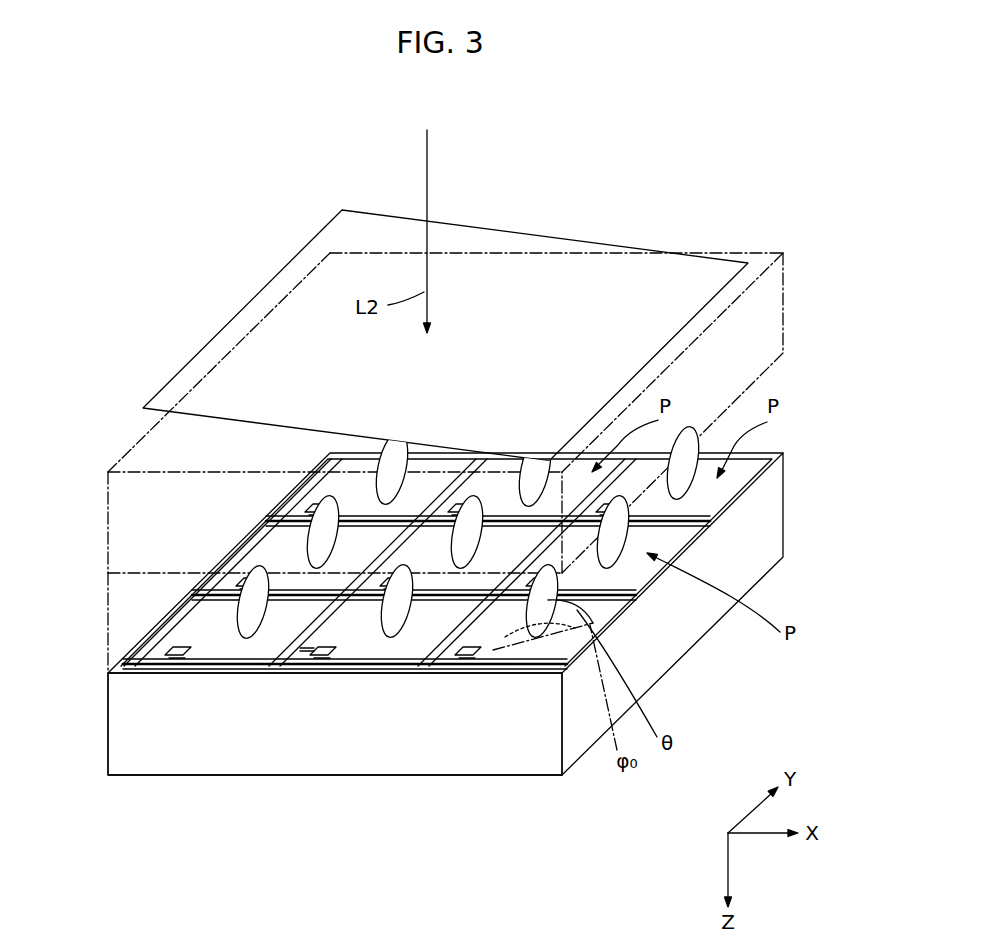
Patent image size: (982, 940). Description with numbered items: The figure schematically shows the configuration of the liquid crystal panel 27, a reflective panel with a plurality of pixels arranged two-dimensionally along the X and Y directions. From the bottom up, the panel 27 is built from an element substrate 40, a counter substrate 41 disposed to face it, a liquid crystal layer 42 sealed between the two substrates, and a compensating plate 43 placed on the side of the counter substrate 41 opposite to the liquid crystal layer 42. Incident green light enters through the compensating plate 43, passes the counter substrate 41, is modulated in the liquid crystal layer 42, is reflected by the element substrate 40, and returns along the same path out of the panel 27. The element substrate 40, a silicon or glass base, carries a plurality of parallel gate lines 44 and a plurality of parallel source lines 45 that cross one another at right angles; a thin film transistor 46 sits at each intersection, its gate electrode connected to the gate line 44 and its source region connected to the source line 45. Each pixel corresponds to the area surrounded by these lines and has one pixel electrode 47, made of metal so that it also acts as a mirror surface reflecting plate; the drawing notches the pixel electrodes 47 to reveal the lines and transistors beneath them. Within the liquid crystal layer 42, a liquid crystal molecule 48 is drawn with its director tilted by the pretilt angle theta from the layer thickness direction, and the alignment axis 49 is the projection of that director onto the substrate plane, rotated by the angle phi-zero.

The liquid crystal panel 27 is at (769, 184).
The element substrate 40 is at (105, 673).
The counter substrate 41 is at (105, 472).
The liquid crystal layer 42 is at (105, 573).
The compensating plate 43 is at (198, 368).
The gate line 44 is at (213, 667).
The source line 45 is at (262, 655).
The thin film transistor 46 is at (360, 655).
The pixel electrode 47 is at (400, 647).
The liquid crystal molecule 48 is at (552, 606).
The alignment axis 49 is at (520, 657).